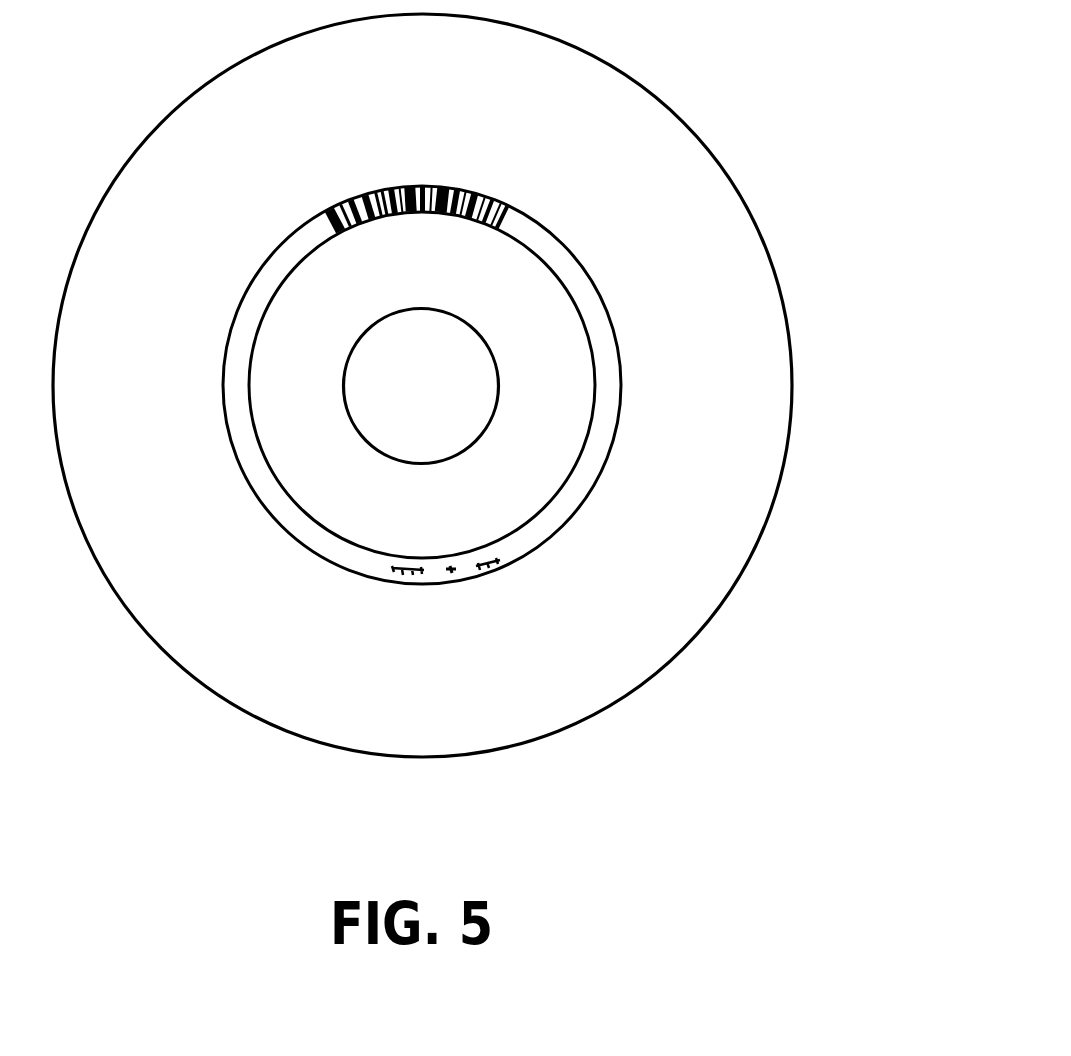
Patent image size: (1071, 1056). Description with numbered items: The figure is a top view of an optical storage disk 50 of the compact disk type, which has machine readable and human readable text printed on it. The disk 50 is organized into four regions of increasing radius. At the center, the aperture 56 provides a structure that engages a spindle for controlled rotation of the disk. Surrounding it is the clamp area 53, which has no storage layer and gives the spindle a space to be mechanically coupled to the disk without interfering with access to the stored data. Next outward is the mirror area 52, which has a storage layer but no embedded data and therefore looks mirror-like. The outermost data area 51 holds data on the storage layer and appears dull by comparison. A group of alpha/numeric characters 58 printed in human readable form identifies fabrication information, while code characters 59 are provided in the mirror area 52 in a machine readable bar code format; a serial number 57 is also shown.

The optical disk 50 is at (592, 50).
The data area 51 is at (718, 230).
The mirror area 52 is at (588, 447).
The clamp area 53 is at (555, 392).
The aperture 56 is at (460, 358).
The serial number 57 is at (367, 543).
The alpha/numeric characters 58 is at (492, 565).
The code characters 59 is at (440, 205).